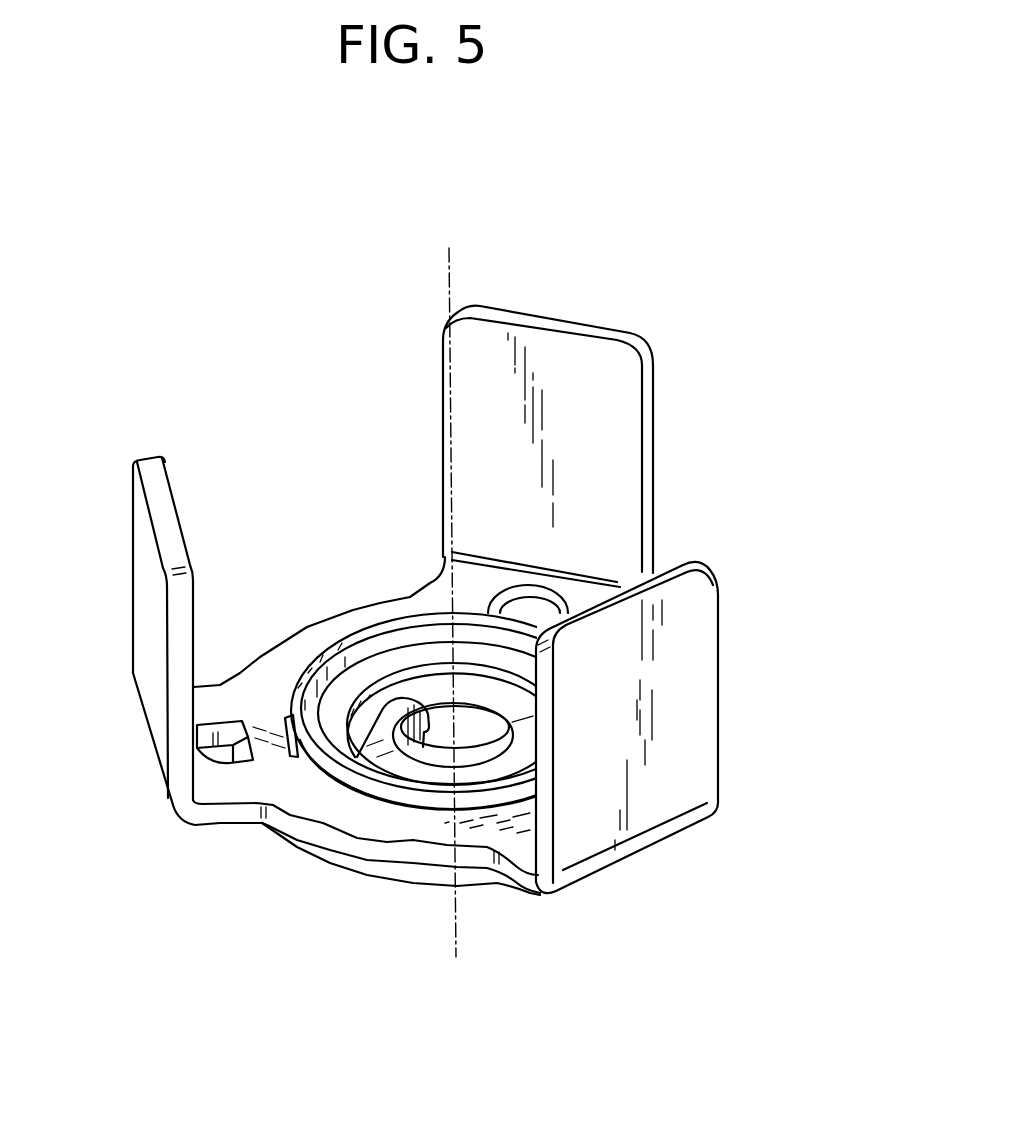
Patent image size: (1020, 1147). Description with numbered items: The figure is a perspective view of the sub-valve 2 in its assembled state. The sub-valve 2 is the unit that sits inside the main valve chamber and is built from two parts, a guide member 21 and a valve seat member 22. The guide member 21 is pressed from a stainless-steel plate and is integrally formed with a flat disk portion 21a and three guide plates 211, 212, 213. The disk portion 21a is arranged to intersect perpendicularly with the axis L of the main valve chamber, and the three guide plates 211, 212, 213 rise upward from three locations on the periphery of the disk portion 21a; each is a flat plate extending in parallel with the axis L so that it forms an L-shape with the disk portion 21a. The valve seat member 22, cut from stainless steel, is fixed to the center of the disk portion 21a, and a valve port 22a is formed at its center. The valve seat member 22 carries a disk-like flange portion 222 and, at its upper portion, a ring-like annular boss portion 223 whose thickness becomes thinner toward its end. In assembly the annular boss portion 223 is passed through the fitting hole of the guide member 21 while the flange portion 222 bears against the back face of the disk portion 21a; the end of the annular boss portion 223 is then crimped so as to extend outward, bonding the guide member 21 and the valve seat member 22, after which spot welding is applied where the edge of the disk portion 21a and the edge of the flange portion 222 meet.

The sub-valve 2 is at (740, 422).
The axis L is at (452, 287).
The guide member 21 is at (121, 716).
The disk portion 21a is at (287, 666).
The guide plate 211 is at (152, 524).
The guide plate 212 is at (687, 650).
The guide plate 213 is at (560, 330).
The valve seat member 22 is at (297, 893).
The valve port 22a is at (365, 752).
The flange portion 222 is at (392, 873).
The annular boss portion 223 is at (357, 752).